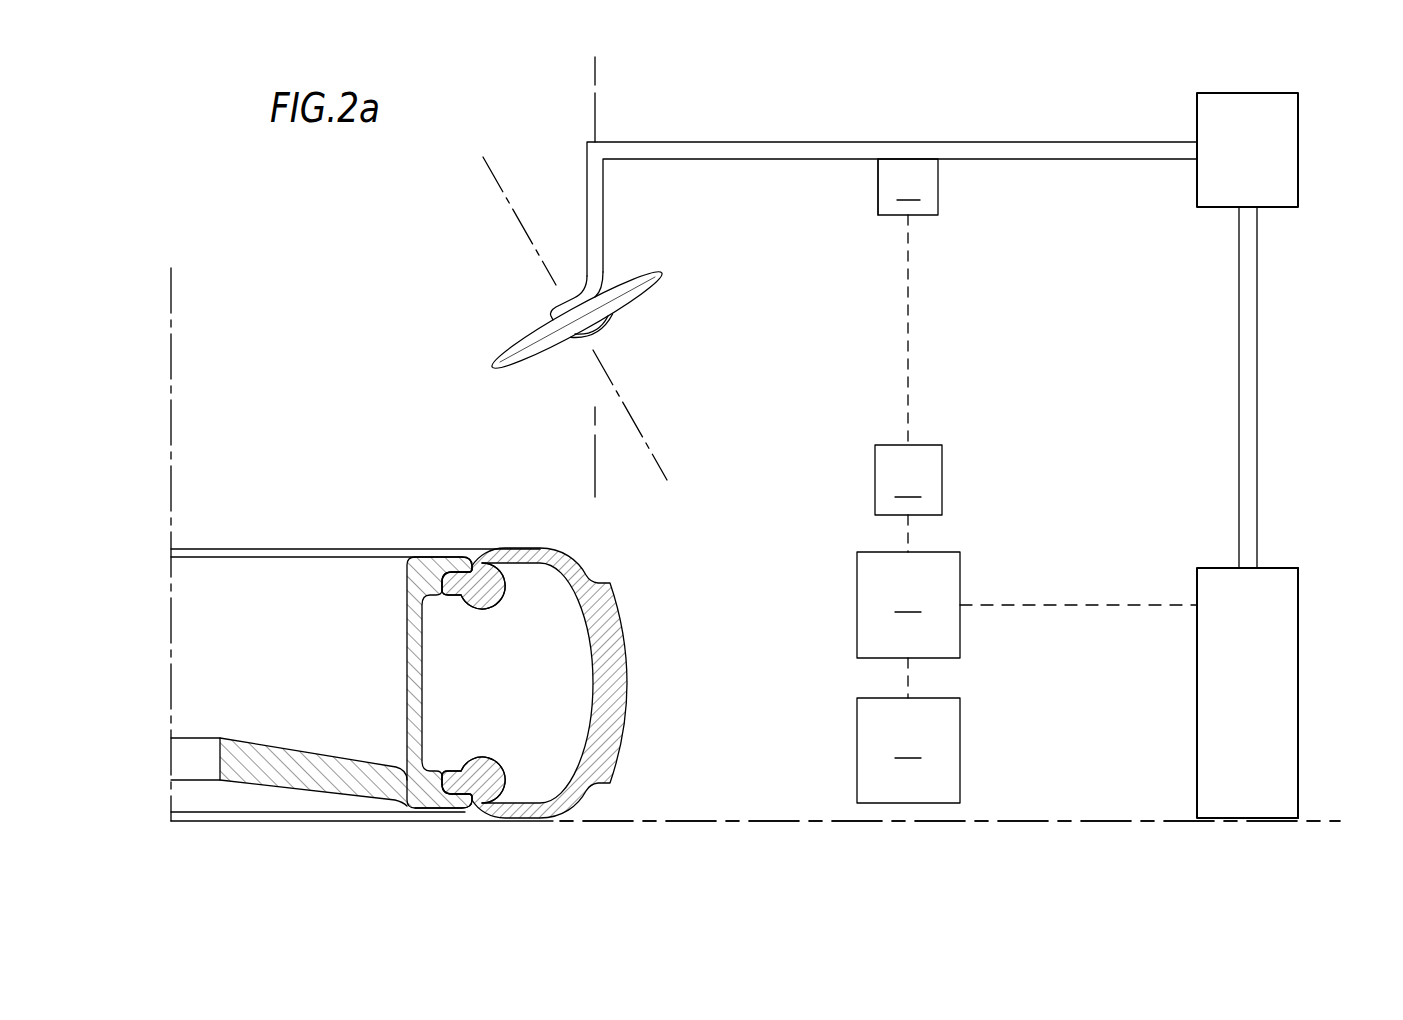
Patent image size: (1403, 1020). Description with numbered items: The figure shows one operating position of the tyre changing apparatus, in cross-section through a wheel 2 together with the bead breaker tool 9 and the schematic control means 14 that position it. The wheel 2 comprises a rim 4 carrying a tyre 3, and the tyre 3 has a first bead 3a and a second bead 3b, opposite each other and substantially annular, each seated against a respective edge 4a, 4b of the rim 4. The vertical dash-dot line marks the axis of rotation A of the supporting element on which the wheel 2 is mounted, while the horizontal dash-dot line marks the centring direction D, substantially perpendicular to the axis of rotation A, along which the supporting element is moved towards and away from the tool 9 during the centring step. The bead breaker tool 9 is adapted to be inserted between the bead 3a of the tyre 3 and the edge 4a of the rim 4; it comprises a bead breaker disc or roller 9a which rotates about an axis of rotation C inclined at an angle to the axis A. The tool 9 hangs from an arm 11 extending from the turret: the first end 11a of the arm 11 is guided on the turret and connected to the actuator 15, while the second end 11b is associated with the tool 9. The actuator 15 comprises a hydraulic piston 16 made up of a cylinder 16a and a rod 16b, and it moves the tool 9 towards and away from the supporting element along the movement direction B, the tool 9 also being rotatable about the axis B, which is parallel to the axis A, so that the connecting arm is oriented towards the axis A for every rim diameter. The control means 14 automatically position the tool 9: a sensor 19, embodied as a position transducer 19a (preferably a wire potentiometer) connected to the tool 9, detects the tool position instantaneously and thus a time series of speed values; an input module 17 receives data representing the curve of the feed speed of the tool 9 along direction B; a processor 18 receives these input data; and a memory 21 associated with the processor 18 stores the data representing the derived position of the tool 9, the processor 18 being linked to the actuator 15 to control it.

The wheel 2 is at (320, 827).
The tyre 3 is at (549, 680).
The first bead 3a is at (503, 570).
The second bead 3b is at (498, 793).
The rim 4 is at (345, 666).
The edge of the rim 4a is at (457, 568).
The edge of the rim 4b is at (452, 803).
The bead breaker tool 9 is at (644, 318).
The bead breaker disc or roller 9a is at (517, 347).
The arm 11 is at (942, 195).
The first end of the arm 11a is at (1263, 143).
The second end of the arm 11b is at (587, 147).
The control means 14 is at (849, 826).
The actuator 15 is at (1306, 720).
The hydraulic piston 16 is at (1306, 792).
The cylinder 16a is at (1298, 668).
The rod 16b is at (1250, 263).
The input module 17 is at (908, 498).
The processor 18 is at (1027, 625).
The sensor 19 is at (908, 302).
The position transducer 19a is at (878, 190).
The memory 21 is at (908, 750).
The axis of rotation A is at (174, 379).
The axis / direction of movement B is at (596, 97).
The axis of rotation of the roller C is at (514, 215).
The centring direction D is at (688, 820).